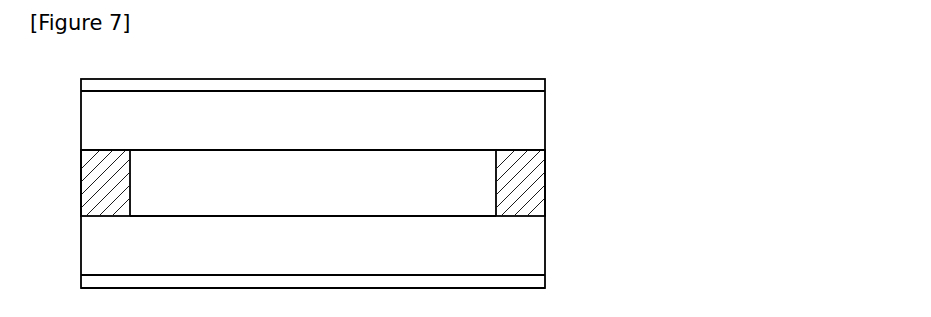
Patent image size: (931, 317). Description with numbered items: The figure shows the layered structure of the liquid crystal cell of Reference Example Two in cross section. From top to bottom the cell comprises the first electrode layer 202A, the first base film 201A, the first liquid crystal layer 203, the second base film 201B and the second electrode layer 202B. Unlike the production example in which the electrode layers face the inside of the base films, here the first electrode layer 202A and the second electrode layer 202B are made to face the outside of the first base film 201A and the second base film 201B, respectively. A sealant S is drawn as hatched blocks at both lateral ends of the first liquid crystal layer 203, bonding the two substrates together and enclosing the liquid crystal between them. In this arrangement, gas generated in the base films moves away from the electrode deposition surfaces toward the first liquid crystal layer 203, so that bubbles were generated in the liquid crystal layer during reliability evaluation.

The first electrode layer 202A is at (548, 85).
The first base film 201A is at (548, 118).
The first liquid crystal layer 203 is at (468, 177).
The sealant S is at (92, 183).
The second base film 201B is at (548, 246).
The second electrode layer 202B is at (548, 283).